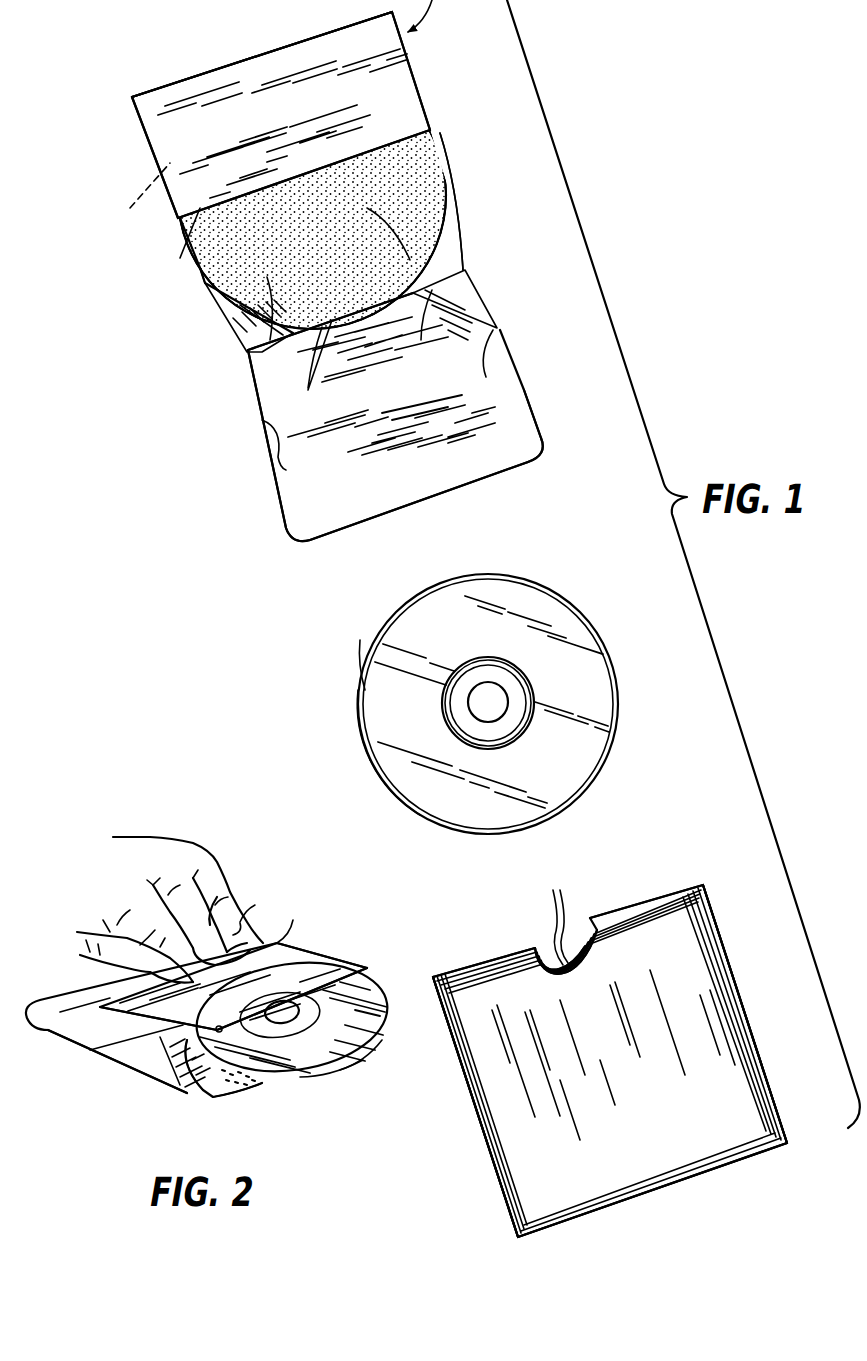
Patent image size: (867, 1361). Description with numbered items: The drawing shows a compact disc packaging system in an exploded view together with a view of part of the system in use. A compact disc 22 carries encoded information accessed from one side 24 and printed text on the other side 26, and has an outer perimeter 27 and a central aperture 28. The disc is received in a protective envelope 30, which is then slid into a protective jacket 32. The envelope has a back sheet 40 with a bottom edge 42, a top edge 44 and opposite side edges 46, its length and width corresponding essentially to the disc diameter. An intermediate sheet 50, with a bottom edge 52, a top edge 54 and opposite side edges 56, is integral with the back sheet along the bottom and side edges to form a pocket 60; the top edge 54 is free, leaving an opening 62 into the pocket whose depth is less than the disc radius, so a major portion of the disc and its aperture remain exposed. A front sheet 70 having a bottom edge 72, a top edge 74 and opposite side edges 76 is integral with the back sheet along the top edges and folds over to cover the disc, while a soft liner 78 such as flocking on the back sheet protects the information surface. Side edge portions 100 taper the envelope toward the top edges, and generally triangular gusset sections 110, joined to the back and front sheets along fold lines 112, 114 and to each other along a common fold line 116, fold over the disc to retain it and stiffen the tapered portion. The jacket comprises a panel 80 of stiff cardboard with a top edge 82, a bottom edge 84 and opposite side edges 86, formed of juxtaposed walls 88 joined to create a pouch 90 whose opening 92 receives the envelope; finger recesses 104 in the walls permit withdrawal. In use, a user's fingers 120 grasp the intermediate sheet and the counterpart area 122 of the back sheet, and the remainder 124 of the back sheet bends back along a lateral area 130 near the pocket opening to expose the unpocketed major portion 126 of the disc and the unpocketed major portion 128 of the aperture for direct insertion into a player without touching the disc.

In FIG. 1, the compact disc 22 is at (583, 602).
In FIG. 2, the compact disc 22 is at (350, 1077).
In FIG. 1, the one side 24 is at (360, 667).
In FIG. 1, the other side 26 is at (358, 707).
In FIG. 1, the outer perimeter 27 is at (376, 775).
In FIG. 2, the outer perimeter 27 is at (357, 1058).
In FIG. 1, the central aperture 28 is at (507, 697).
In FIG. 2, the central aperture 28 is at (372, 1030).
In FIG. 1, the protective envelope 30 is at (440, 130).
In FIG. 2, the protective envelope 30 is at (133, 1030).
In FIG. 2, the protective jacket 32 is at (710, 912).
In FIG. 1, the back sheet 40 is at (452, 197).
In FIG. 2, the back sheet 40 is at (262, 1085).
In FIG. 1, the bottom edge 42 is at (177, 83).
In FIG. 1, the top edge 44 is at (330, 360).
In FIG. 1, the opposite side edges 46 is at (447, 163).
In FIG. 1, the intermediate sheet 50 is at (408, 97).
In FIG. 2, the intermediate sheet 50 is at (287, 953).
In FIG. 1, the bottom edge 52 is at (250, 53).
In FIG. 1, the top edge 54 is at (197, 278).
In FIG. 1, the opposite side edges 56 is at (407, 63).
In FIG. 1, the pocket 60 is at (130, 208).
In FIG. 2, the pocket 60 is at (216, 1029).
In FIG. 1, the opening 62 is at (183, 301).
In FIG. 2, the opening 62 is at (368, 970).
In FIG. 1, the front sheet 70 is at (522, 407).
In FIG. 2, the front sheet 70 is at (50, 1010).
In FIG. 1, the bottom edge 72 is at (455, 490).
In FIG. 1, the top edge 74 is at (358, 312).
In FIG. 1, the opposite side edges 76 is at (547, 440).
In FIG. 1, the liner 78 is at (420, 217).
In FIG. 2, the panel 80 is at (735, 988).
In FIG. 2, the top edge 82 is at (615, 905).
In FIG. 2, the bottom edge 84 is at (700, 1182).
In FIG. 2, the opposite side edges 86 is at (760, 1057).
In FIG. 2, the walls 88 is at (452, 965).
In FIG. 2, the pouch 90 is at (534, 982).
In FIG. 2, the opening 92 is at (495, 952).
In FIG. 1, the side edge portions 100 is at (235, 322).
In FIG. 2, the finger recesses 104 is at (557, 911).
In FIG. 1, the gusset sections 110 is at (243, 363).
In FIG. 1, the fold line 112 is at (367, 208).
In FIG. 1, the fold line 114 is at (391, 415).
In FIG. 1, the common fold line 116 is at (354, 316).
In FIG. 2, the fingers 120 is at (240, 923).
In FIG. 2, the counterpart area 122 is at (293, 920).
In FIG. 2, the remainder 124 is at (197, 1095).
In FIG. 2, the unpocketed major portion 126 is at (357, 1062).
In FIG. 2, the unpocketed major portion 128 is at (320, 960).
In FIG. 2, the lateral area 130 is at (217, 1097).